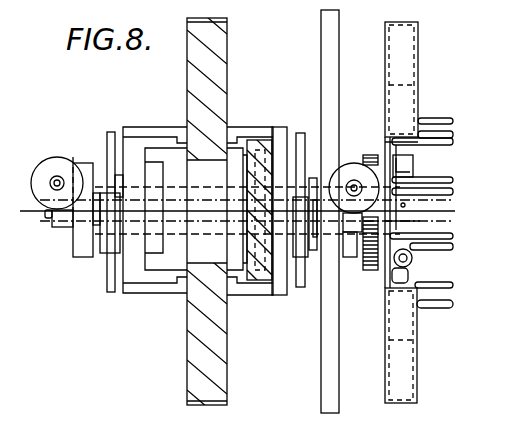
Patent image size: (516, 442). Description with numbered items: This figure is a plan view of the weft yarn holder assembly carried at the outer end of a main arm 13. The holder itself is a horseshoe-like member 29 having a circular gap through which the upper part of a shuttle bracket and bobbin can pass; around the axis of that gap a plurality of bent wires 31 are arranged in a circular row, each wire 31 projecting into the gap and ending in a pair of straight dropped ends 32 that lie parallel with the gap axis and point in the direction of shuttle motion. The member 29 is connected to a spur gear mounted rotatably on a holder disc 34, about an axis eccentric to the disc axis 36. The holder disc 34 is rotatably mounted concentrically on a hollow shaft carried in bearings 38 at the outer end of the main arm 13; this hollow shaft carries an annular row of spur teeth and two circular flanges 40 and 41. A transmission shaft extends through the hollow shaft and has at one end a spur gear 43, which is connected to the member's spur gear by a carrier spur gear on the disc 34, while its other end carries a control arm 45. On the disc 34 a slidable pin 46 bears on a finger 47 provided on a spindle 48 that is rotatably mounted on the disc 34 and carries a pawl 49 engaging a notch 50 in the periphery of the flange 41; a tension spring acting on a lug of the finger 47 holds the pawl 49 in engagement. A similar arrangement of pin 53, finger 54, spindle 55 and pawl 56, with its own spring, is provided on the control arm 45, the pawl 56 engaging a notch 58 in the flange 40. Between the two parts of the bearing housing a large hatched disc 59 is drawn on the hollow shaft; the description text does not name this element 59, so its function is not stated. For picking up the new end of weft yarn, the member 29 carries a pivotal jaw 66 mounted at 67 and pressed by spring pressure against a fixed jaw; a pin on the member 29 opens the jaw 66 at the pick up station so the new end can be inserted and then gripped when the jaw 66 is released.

The main arm 13 is at (257, 142).
The horseshoe-like member 29 is at (418, 70).
The bent wires 31 is at (398, 168).
The dropped ends 32 is at (440, 107).
The holder disc 34 is at (325, 385).
The disc axis 36 is at (450, 213).
The bearings 38 is at (152, 255).
The circular flange 40 is at (110, 284).
The circular flange 41 is at (286, 290).
The spur gear 43 is at (372, 155).
The control arm 45 is at (84, 246).
The slidable pin 46 is at (354, 185).
The finger 47 is at (349, 236).
The spindle 48 is at (370, 271).
The pawl 49 is at (300, 134).
The notch 50 is at (300, 259).
The pin 53 is at (56, 180).
The finger 54 is at (60, 222).
The spindle 55 is at (47, 214).
The pawl 56 is at (108, 192).
The notch 58 is at (105, 254).
The disc 59 is at (228, 20).
The pivotal jaw 66 is at (413, 221).
The pivot mounting 67 is at (413, 258).